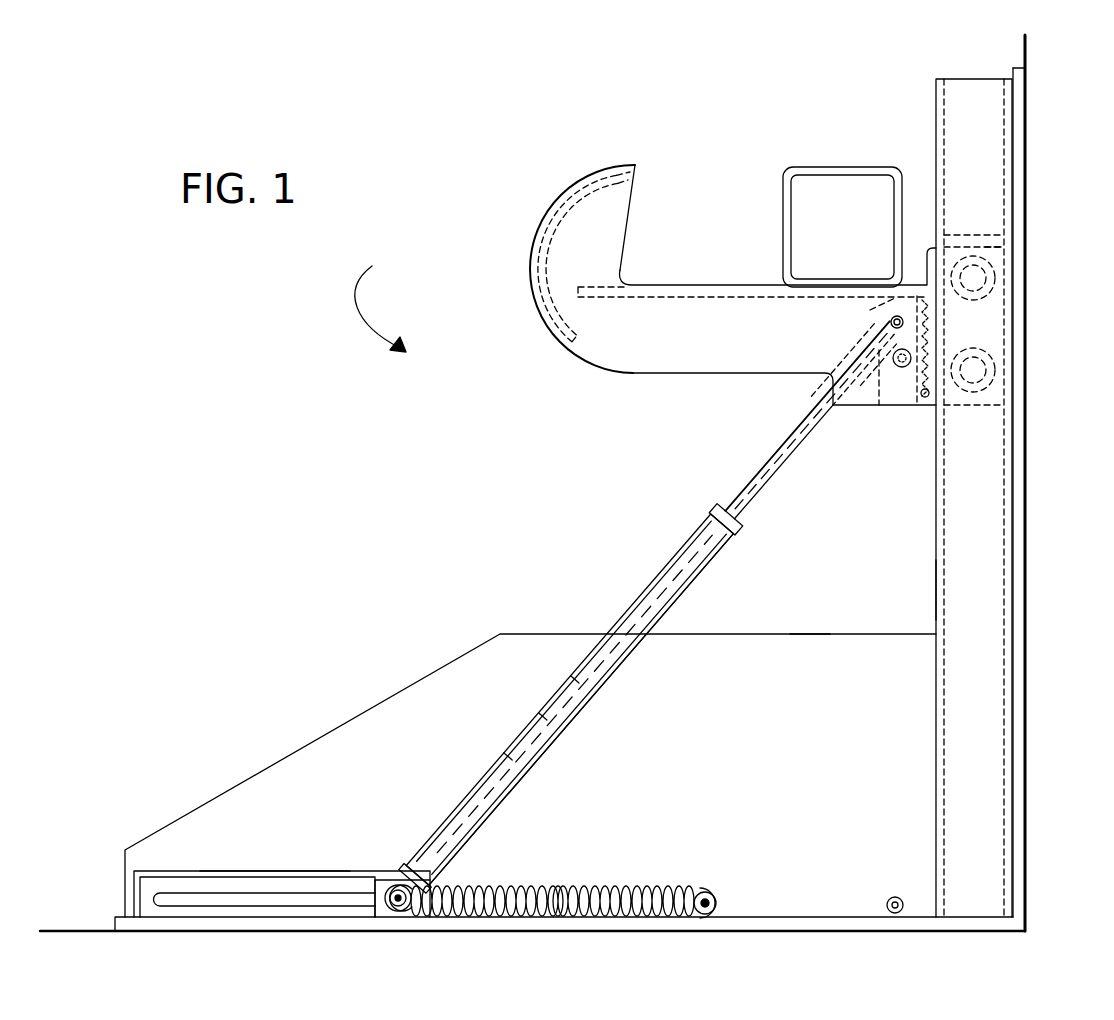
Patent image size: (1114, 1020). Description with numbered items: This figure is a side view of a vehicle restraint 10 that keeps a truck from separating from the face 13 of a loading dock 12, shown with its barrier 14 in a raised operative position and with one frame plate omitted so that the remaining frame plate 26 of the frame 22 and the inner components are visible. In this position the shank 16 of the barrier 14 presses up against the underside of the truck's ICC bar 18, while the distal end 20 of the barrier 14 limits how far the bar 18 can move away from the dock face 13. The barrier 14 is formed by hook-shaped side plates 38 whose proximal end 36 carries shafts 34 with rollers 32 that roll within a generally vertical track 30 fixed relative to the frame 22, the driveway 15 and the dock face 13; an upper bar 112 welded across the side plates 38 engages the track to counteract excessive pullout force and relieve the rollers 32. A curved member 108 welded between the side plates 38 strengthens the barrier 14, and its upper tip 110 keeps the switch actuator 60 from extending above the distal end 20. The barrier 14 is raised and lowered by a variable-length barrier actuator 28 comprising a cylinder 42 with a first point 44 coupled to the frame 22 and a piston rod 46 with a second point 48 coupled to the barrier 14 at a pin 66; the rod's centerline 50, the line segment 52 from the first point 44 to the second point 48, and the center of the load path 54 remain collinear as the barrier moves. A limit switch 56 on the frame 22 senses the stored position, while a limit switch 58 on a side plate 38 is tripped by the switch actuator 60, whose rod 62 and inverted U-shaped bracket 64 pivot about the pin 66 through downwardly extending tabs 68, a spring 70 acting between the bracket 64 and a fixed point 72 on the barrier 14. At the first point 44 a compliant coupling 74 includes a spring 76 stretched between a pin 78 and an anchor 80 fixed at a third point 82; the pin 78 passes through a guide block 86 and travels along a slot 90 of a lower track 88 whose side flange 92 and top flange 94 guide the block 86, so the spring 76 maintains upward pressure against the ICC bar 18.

The vehicle restraint 10 is at (382, 297).
The loading dock 12 is at (1025, 52).
The dock face 13 is at (1023, 687).
The barrier 14 is at (526, 278).
The driveway 15 is at (88, 930).
The shank 16 is at (700, 374).
The ICC bar 18 is at (783, 218).
The distal end 20 is at (640, 158).
The frame 22 is at (1012, 104).
The frame plate 26 is at (328, 735).
The barrier actuator 28 is at (668, 565).
The track 30 is at (935, 585).
The rollers 32 is at (995, 258).
The shafts 34 is at (985, 295).
The proximal end 36 is at (997, 247).
The hook-shaped side plates 38 is at (722, 344).
The cylinder 42 is at (560, 752).
The first point 44 is at (394, 885).
The piston rod 46 is at (762, 472).
The second point 48 is at (882, 320).
The centerline 50 is at (545, 718).
The line segment 52 is at (505, 758).
The load path 54 is at (575, 676).
The limit switch 56 is at (887, 905).
The limit switch 58 is at (900, 372).
The switch actuator 60 is at (655, 300).
The rod 62 is at (680, 300).
The inverted U-shaped bracket 64 is at (878, 312).
The pin 66 is at (897, 316).
The tabs 68 is at (886, 372).
The spring 70 is at (933, 345).
The fixed point 72 is at (923, 398).
The compliant coupling 74 is at (614, 888).
The spring 76 is at (562, 886).
The pin 78 is at (437, 897).
The anchor 80 is at (703, 892).
The third point 82 is at (716, 903).
The guide block 86 is at (372, 885).
The lower track 88 is at (134, 905).
The slot 90 is at (236, 893).
The side flange 92 is at (150, 882).
The top flange 94 is at (272, 871).
The curved member 108 is at (553, 323).
The upper tip 110 is at (613, 175).
The upper bar 112 is at (972, 235).